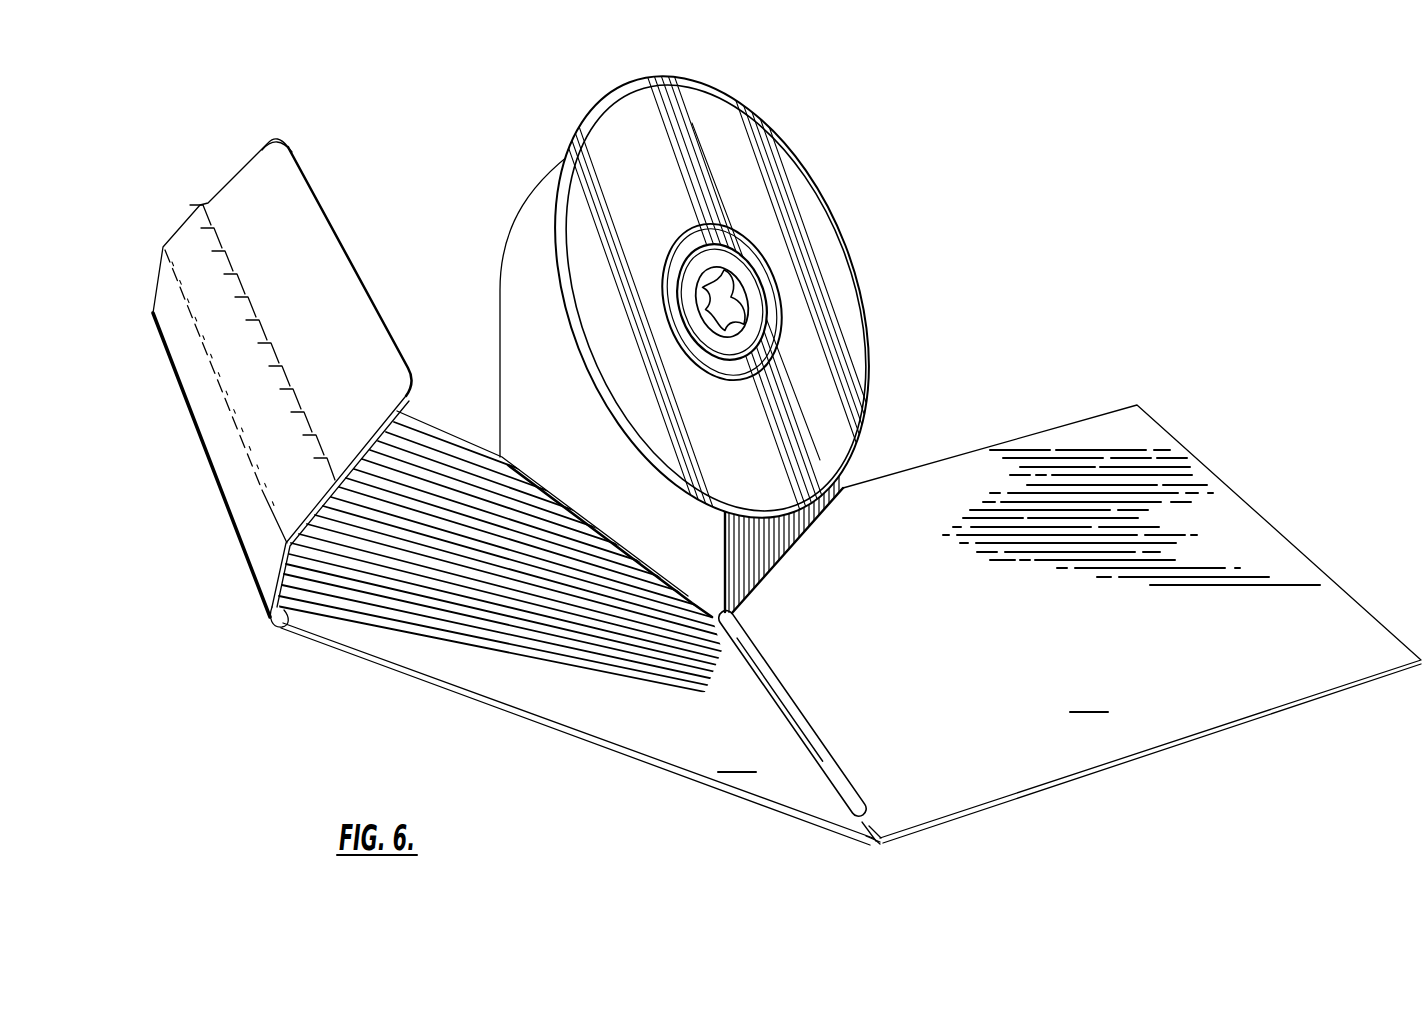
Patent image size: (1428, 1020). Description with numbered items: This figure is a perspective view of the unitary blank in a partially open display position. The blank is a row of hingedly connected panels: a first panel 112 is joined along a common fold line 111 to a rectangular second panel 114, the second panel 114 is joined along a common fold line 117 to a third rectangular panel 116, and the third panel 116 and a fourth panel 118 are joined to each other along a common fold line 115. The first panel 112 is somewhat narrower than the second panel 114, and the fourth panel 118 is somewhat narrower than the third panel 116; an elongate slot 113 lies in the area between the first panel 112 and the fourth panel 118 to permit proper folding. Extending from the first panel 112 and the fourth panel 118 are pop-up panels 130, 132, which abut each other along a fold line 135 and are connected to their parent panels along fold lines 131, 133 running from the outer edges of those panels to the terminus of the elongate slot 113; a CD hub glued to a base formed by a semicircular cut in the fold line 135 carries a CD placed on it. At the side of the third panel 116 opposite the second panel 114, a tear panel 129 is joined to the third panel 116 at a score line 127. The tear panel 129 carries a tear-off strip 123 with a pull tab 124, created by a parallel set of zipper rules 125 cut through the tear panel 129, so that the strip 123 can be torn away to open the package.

The fold line 111 is at (1128, 755).
The first panel 112 is at (1132, 624).
The elongate slot 113 is at (827, 755).
The second panel 114 is at (1248, 720).
The fold line 115 is at (597, 747).
The third panel 116 is at (410, 680).
The fold line 117 is at (830, 773).
The fourth panel 118 is at (518, 592).
The tear-off strip 123 is at (207, 291).
The pull tab 124 is at (177, 223).
The zipper rules 125 is at (280, 363).
The score line 127 is at (158, 273).
The tear panel 129 is at (266, 178).
The pop-up panel 130 is at (840, 490).
The fold line 131 is at (770, 578).
The pop-up panel 132 is at (523, 342).
The fold line 133 is at (683, 597).
The fold line 135 is at (722, 570).